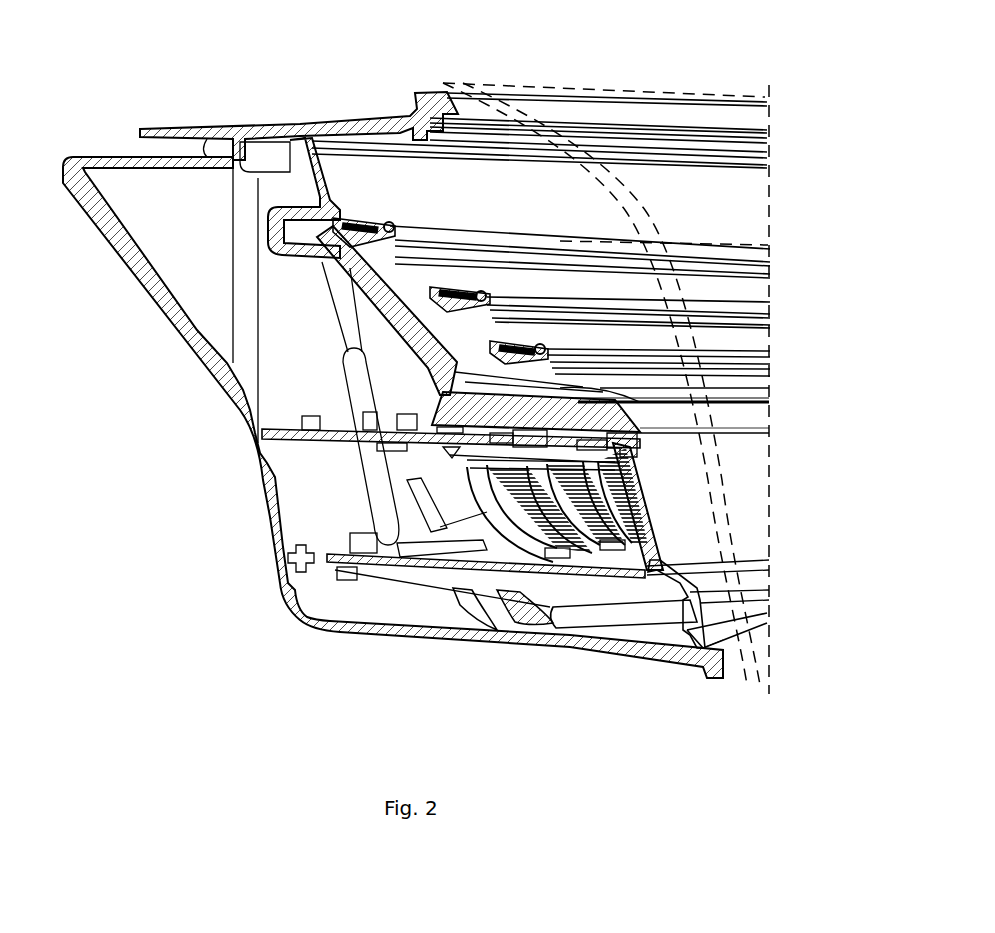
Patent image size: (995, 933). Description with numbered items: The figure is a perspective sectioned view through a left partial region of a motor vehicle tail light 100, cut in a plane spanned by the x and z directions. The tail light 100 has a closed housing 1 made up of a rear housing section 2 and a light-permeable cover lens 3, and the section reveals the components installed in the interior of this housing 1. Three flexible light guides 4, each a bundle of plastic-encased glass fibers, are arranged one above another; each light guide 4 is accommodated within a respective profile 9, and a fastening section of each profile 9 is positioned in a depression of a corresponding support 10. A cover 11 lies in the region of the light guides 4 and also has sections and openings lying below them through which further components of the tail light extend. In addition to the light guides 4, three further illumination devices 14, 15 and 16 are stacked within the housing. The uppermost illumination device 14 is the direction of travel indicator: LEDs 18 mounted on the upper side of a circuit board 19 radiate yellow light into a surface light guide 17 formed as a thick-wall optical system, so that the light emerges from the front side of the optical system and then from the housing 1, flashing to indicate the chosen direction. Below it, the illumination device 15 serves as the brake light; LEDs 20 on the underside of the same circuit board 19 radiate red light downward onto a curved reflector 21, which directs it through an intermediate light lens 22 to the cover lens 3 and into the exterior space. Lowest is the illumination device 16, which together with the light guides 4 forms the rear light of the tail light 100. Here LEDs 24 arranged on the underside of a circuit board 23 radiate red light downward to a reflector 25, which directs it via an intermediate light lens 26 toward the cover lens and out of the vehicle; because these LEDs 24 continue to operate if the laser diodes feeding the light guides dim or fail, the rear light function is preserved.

The tail light 100 is at (603, 70).
The housing 1 is at (350, 113).
The rear housing section 2 is at (127, 252).
The cover lens 3 is at (752, 212).
The light guide 4 is at (390, 224).
The profile 9 is at (458, 232).
The support 10 is at (335, 218).
The cover 11 is at (288, 173).
The illumination device 14 is at (683, 432).
The illumination device 15 is at (695, 540).
The illumination device 16 is at (760, 620).
The surface light guide 17 is at (648, 416).
The LED 18 is at (437, 393).
The circuit board 19 is at (270, 430).
The LED 20 is at (443, 455).
The reflector 21 is at (420, 482).
The intermediate light lens 22 is at (706, 568).
The circuit board 23 is at (340, 570).
The LED 24 is at (523, 590).
The reflector 25 is at (537, 623).
The intermediate light lens 26 is at (687, 617).